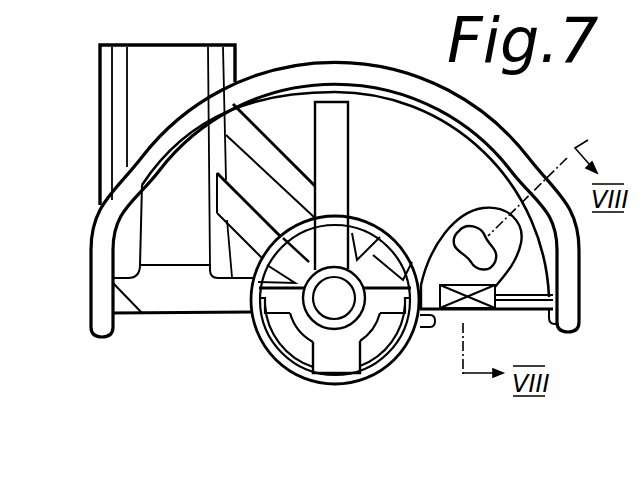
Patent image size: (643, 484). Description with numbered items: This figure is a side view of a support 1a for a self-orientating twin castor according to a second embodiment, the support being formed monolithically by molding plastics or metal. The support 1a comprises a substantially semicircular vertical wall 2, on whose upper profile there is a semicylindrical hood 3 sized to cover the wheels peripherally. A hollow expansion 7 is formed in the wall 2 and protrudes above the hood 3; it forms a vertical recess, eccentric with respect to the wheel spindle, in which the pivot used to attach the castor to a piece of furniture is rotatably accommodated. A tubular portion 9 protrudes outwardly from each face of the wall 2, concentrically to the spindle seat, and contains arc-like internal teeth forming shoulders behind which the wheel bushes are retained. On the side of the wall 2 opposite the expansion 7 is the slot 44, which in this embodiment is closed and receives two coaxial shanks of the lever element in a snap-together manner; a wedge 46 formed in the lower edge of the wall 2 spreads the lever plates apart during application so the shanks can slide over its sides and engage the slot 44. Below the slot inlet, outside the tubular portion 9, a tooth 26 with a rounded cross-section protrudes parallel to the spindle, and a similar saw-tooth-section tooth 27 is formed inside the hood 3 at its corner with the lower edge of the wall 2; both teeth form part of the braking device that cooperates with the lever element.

The support 1a is at (523, 125).
The vertical wall 2 is at (337, 72).
The semicylindrical hood 3 is at (278, 74).
The hollow expansion 7 is at (107, 76).
The tubular portion 9 is at (253, 343).
The tooth 26 is at (434, 328).
The tooth 27 is at (557, 332).
The slot 44 is at (470, 230).
The wedge 46 is at (475, 306).